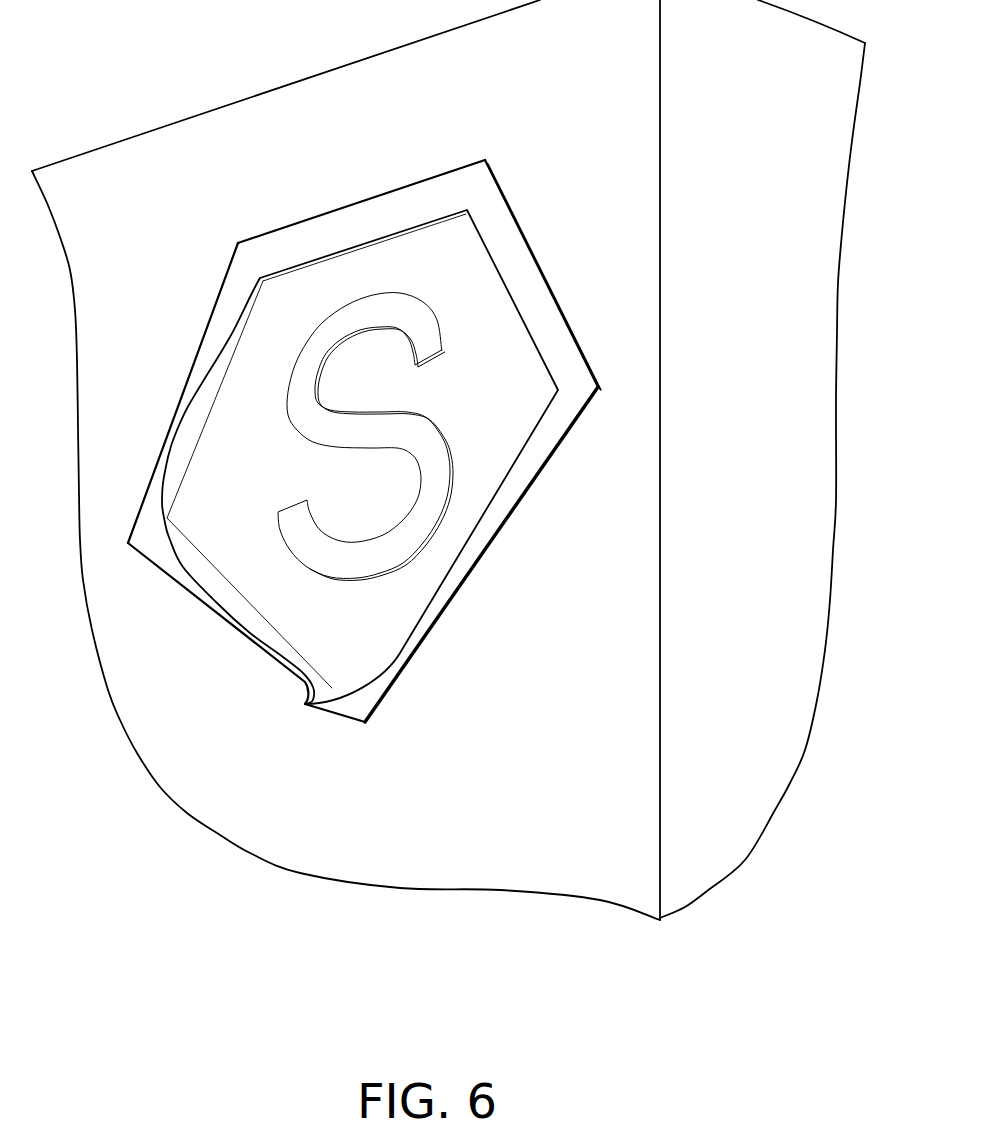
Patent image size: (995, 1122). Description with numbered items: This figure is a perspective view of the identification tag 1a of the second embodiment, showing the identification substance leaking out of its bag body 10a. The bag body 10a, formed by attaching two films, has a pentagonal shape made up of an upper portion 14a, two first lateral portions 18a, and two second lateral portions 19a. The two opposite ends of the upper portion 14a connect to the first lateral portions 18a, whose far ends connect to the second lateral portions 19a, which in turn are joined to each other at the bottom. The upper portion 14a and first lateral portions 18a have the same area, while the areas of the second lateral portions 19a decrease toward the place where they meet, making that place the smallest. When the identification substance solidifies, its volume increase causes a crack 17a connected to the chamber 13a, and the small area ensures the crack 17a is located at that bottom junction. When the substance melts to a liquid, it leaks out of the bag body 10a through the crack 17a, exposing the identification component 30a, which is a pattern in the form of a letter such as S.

The identification tag 1a is at (350, 175).
The bag body 10a is at (288, 213).
The chamber 13a is at (478, 422).
The upper portion 14a is at (423, 177).
The crack 17a is at (363, 693).
The first lateral portion 18a is at (202, 339).
The second lateral portion 19a is at (216, 616).
The identification component 30a is at (438, 332).